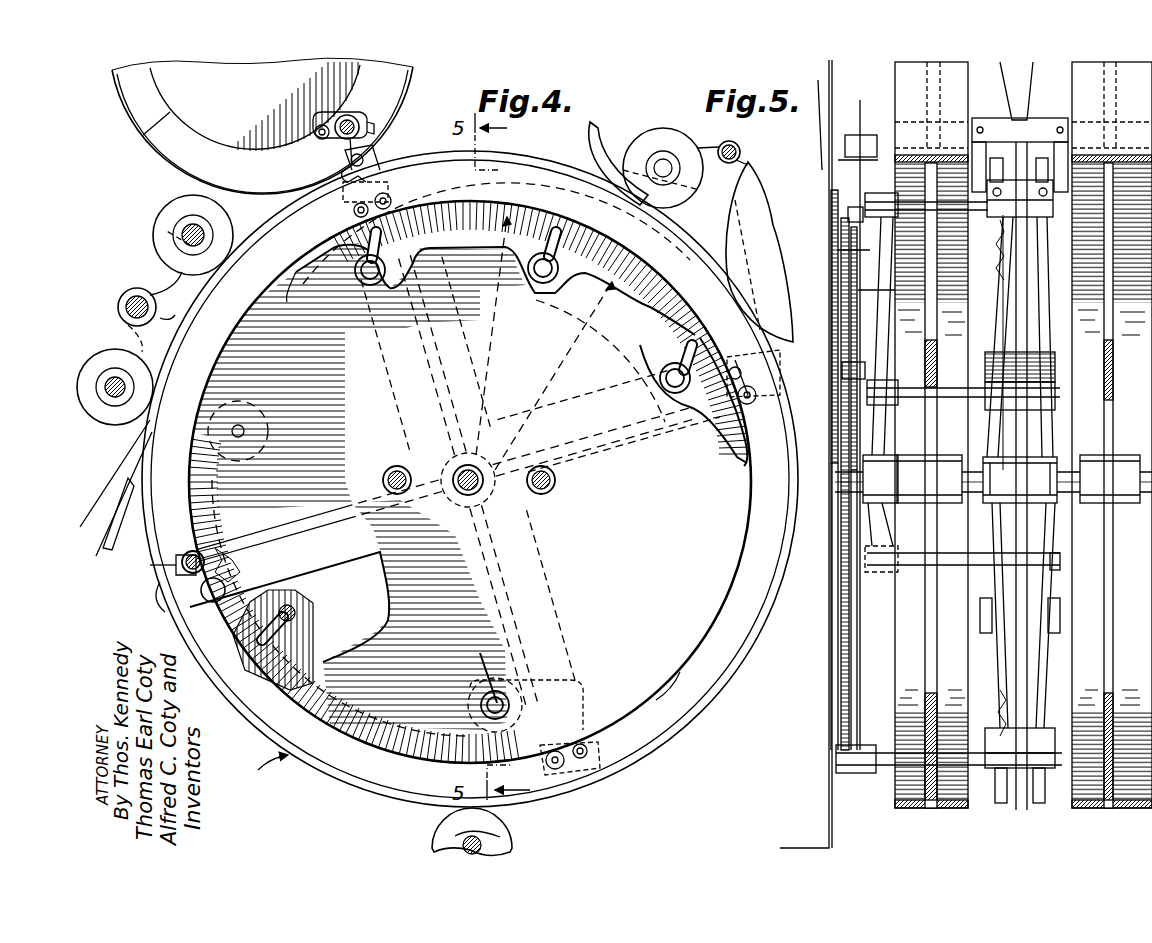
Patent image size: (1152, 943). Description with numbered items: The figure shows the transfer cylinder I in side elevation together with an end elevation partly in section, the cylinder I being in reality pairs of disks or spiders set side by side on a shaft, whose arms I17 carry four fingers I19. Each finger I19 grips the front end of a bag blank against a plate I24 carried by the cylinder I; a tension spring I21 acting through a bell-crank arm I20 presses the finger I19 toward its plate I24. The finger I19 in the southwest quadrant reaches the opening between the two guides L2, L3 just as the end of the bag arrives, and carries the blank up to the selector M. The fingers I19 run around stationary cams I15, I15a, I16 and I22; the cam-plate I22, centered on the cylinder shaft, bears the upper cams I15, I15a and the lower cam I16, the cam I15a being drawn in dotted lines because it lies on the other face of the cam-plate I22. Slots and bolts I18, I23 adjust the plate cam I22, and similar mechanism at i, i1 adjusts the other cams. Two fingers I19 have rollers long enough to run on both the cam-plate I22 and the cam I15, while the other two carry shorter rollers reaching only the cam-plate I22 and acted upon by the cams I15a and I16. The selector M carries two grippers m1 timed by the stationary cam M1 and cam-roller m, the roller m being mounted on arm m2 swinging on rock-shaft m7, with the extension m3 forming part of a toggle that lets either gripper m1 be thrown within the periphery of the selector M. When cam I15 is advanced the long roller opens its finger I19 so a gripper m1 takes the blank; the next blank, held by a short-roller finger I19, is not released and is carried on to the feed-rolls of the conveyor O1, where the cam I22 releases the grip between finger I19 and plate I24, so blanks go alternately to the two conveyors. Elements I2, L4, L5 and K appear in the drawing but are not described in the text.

In FIG. 4, the selector M is at (128, 98).
In FIG. 5, the selector M is at (1023, 435).
In FIG. 4, the stationary cam M1 is at (168, 108).
In FIG. 5, the stationary cam M1 is at (822, 100).
In FIG. 4, the cam-roller m is at (312, 148).
In FIG. 4, the gripper m1 is at (345, 170).
In FIG. 5, the gripper m1 is at (992, 128).
In FIG. 4, the arm m2 is at (330, 122).
In FIG. 4, the extension m3 is at (355, 115).
In FIG. 4, the rock-shaft m7 is at (362, 118).
In FIG. 4, the cylinder I is at (259, 771).
In FIG. 5, the cylinder I is at (920, 808).
In FIG. 4, the fountain roller segment I2 is at (512, 830).
In FIG. 4, the cam I15 is at (560, 162).
In FIG. 5, the cam I15 is at (832, 336).
In FIG. 4, the cam I15a is at (612, 318).
In FIG. 5, the cam I15a is at (858, 290).
In FIG. 4, the lower cam I16 is at (350, 738).
In FIG. 5, the lower cam I16 is at (845, 706).
In FIG. 4, the arms of the spiders I17 is at (330, 560).
In FIG. 5, the arms of the spiders I17 is at (1021, 476).
In FIG. 4, the slots and bolts I18 is at (468, 465).
In FIG. 4, the finger I19 is at (385, 155).
In FIG. 5, the finger I19 is at (1020, 163).
In FIG. 4, the bell-crank arm I20 is at (213, 555).
In FIG. 5, the bell-crank arm I20 is at (992, 240).
In FIG. 4, the tension spring I21 is at (242, 560).
In FIG. 5, the tension spring I21 is at (1002, 265).
In FIG. 4, the cam-plate I22 is at (478, 280).
In FIG. 5, the cam-plate I22 is at (840, 632).
In FIG. 4, the slots and bolts I23 is at (385, 470).
In FIG. 4, the plate I24 is at (765, 335).
In FIG. 5, the plate I24 is at (1040, 200).
In FIG. 4, the guide L2 is at (105, 540).
In FIG. 4, the guide L3 is at (158, 290).
In FIG. 4, the roller L4 is at (106, 350).
In FIG. 4, the roller L5 is at (152, 236).
In FIG. 4, the adjusting mechanism i is at (385, 290).
In FIG. 4, the adjusting mechanism i1 is at (378, 288).
In FIG. 4, the conveyor O1 is at (760, 222).
In FIG. 5, the frame K is at (825, 812).